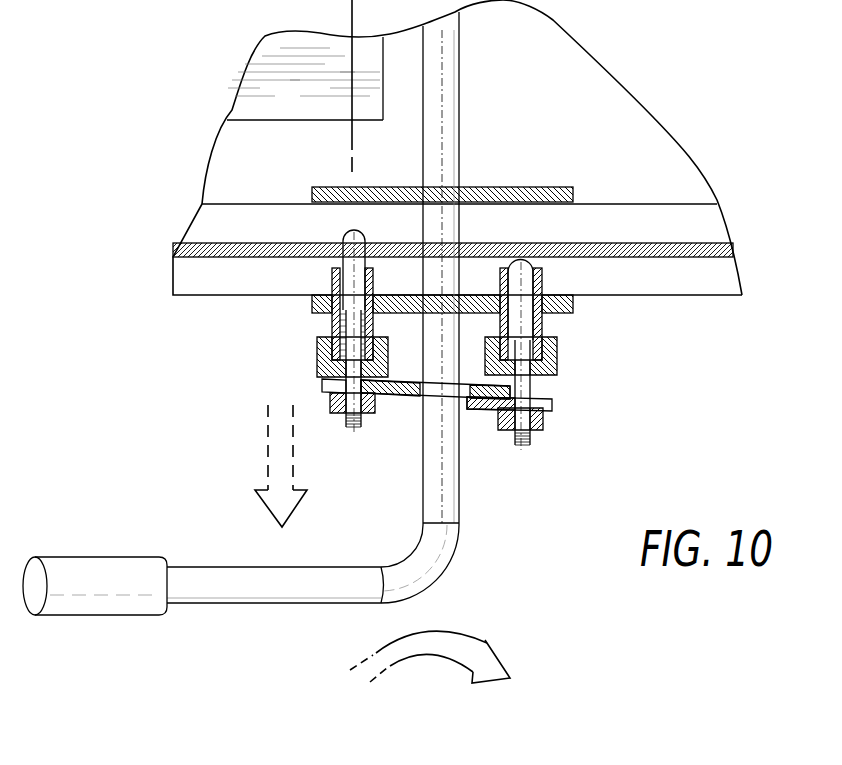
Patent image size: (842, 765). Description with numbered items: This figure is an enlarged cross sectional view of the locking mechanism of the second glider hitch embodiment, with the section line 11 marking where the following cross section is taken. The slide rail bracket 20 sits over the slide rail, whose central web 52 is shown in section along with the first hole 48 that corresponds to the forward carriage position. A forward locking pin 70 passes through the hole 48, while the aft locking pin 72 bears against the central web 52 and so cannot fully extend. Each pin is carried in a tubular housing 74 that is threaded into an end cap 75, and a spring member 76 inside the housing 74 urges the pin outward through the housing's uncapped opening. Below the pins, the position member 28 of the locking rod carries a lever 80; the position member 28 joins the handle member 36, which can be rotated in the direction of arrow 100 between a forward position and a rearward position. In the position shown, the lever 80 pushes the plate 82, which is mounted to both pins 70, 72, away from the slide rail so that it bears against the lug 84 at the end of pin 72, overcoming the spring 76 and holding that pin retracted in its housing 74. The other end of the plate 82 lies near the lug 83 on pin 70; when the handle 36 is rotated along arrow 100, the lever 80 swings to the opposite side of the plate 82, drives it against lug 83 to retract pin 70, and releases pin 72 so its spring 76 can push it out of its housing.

The section line 11- 11 is at (353, 428).
The slide rail bracket 20 is at (544, 755).
The position member 28 is at (458, 515).
The handle member 36 is at (230, 597).
The first hole 48 is at (341, 266).
The central web 52 is at (688, 243).
The forward locking pin 70 is at (337, 268).
The aft locking pin 72 is at (522, 272).
The tubular housing 74 is at (332, 320).
The end cap 75 is at (322, 379).
The spring member 76 is at (317, 338).
The lever 80 is at (510, 388).
The plate 82 is at (552, 403).
The lug 83 is at (375, 412).
The lug 84 is at (505, 430).
The rotation arrow 100 is at (437, 658).